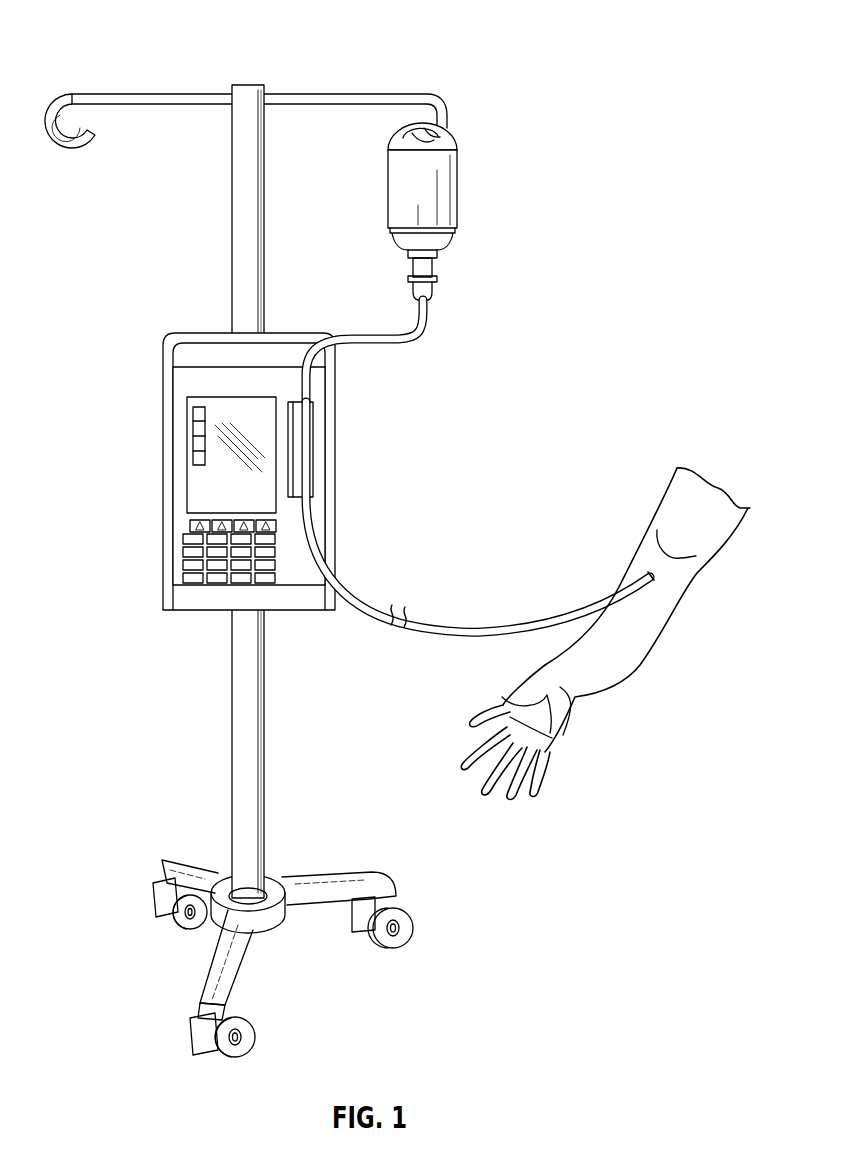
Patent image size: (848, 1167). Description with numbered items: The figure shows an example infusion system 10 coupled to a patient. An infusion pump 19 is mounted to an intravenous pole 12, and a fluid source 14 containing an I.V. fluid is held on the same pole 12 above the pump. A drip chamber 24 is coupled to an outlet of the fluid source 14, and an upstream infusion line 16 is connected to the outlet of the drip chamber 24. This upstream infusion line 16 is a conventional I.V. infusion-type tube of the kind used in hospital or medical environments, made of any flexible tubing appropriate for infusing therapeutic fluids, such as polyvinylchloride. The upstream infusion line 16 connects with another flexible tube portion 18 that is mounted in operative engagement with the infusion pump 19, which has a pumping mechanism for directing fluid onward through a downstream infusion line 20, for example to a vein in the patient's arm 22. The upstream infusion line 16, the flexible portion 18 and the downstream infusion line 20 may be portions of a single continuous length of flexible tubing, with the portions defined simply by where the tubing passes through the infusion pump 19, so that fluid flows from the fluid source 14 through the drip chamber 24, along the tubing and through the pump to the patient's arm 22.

The infusion system 10 is at (94, 43).
The intravenous pole 12 is at (232, 184).
The fluid source 14 is at (388, 190).
The upstream infusion line 16 is at (378, 337).
The flexible tube portion 18 is at (312, 488).
The infusion pump 19 is at (335, 443).
The downstream infusion line 20 is at (452, 637).
The patient's arm 22 is at (672, 505).
The drip chamber 24 is at (428, 268).